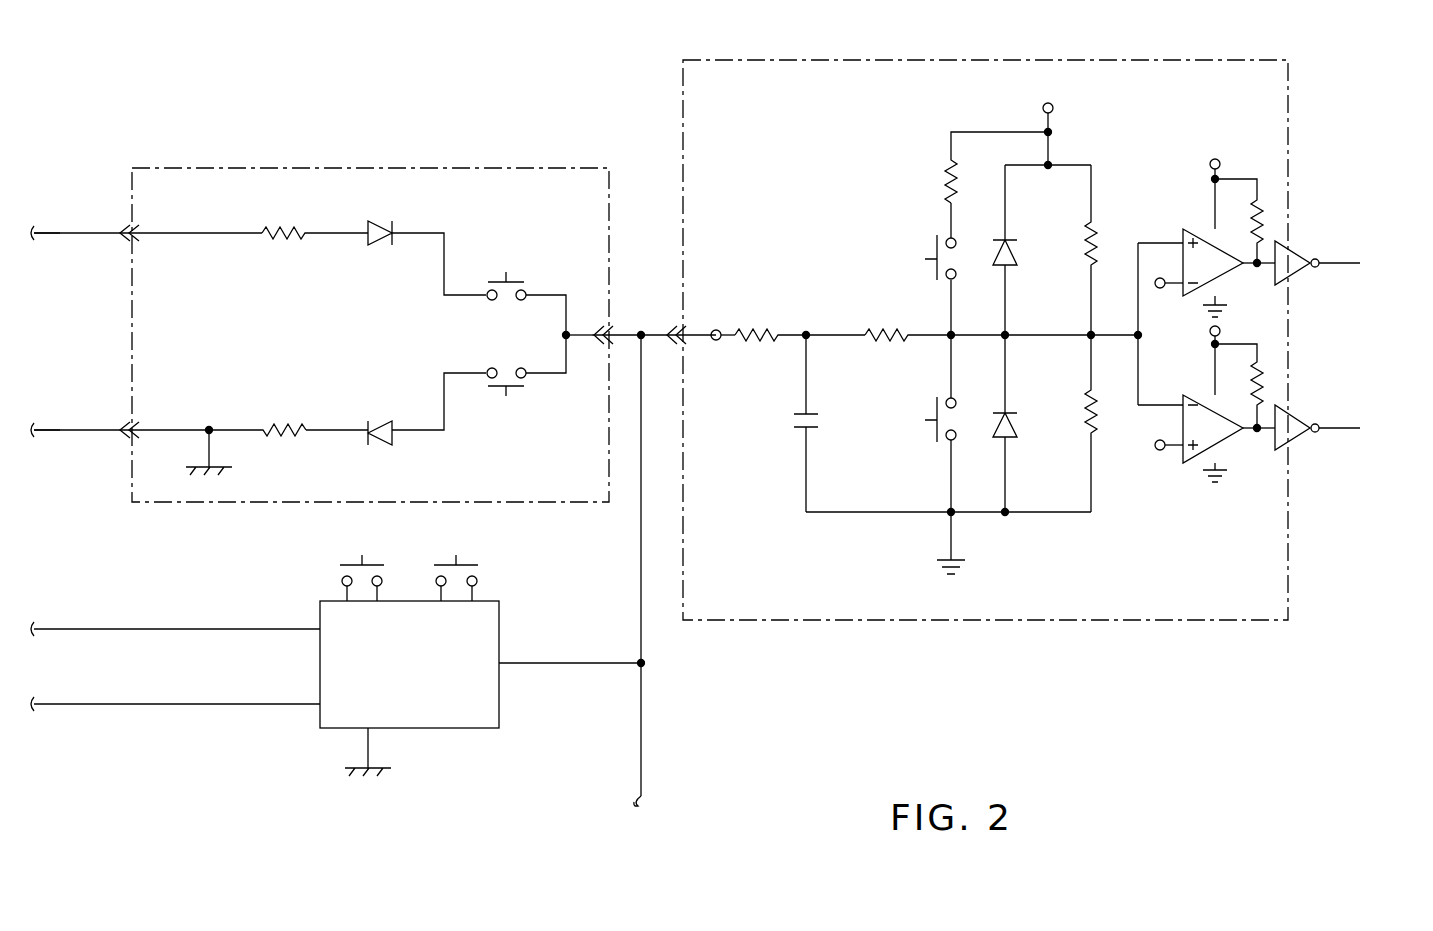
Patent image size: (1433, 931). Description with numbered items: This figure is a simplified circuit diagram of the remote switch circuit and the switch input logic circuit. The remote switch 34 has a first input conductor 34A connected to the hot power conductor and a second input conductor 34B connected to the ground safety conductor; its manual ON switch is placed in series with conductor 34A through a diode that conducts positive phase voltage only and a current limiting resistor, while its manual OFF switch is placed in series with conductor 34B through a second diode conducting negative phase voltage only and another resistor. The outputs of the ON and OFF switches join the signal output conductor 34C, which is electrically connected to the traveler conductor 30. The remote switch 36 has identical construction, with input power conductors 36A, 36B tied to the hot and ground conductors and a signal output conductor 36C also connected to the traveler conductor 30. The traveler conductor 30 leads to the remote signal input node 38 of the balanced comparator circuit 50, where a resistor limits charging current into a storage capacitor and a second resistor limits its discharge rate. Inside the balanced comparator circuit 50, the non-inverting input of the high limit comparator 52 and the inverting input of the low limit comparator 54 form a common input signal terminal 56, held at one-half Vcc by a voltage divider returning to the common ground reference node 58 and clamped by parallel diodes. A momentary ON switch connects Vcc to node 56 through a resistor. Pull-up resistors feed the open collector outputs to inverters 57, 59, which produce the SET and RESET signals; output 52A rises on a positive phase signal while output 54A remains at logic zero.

The traveler conductor 30 is at (654, 334).
The remote switch 34 is at (186, 166).
The first input conductor 34A is at (55, 237).
The second input conductor 34B is at (55, 434).
The signal output conductor 34C is at (598, 333).
The remote switch 36 is at (500, 613).
The input power conductor 36A is at (165, 628).
The input power conductor 36B is at (170, 703).
The signal output conductor 36C is at (603, 663).
The remote signal input node 38 is at (714, 330).
The balanced comparator circuit 50 is at (786, 59).
The high limit comparator 52 is at (1196, 206).
The output of high limit comparator 52A is at (1336, 261).
The low limit comparator 54 is at (1193, 472).
The output of low limit comparator 54A is at (1340, 437).
The common input signal terminal 56 is at (1140, 337).
The inverter 57 is at (1288, 281).
The common ground reference node 58 is at (946, 518).
The inverter 59 is at (1288, 445).